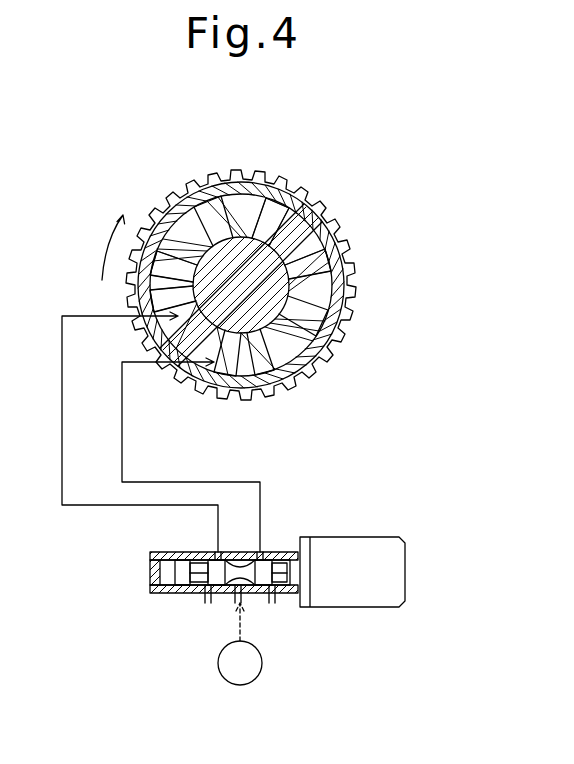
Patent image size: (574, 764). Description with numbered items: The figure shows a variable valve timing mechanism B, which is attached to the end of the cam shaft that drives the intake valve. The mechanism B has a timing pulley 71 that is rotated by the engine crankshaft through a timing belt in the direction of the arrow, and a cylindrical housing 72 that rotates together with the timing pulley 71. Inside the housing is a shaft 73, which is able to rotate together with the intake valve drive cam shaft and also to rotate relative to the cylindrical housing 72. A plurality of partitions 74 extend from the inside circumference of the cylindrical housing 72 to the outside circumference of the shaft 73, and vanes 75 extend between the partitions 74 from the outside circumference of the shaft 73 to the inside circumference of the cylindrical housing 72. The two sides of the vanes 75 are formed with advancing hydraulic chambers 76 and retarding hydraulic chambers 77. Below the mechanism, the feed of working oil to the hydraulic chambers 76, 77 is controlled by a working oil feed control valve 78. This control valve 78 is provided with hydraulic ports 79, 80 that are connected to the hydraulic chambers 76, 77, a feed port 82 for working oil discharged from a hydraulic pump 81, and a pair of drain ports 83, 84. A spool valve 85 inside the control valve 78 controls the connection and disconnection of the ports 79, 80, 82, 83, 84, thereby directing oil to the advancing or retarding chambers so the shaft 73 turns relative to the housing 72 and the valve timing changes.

The timing pulley 71 is at (352, 322).
The cylindrical housing 72 is at (330, 370).
The shaft 73 is at (299, 192).
The partitions 74 is at (203, 180).
The vanes 75 is at (177, 198).
The advancing hydraulic chambers 76 is at (345, 297).
The retarding hydraulic chambers 77 is at (172, 326).
The working oil feed control valve 78 is at (385, 520).
The hydraulic port 79 is at (262, 548).
The hydraulic port 80 is at (217, 549).
The hydraulic pump 81 is at (260, 672).
The feed port 82 is at (235, 602).
The drain port 83 is at (272, 602).
The drain port 84 is at (205, 602).
The spool valve 85 is at (183, 572).
The variable valve timing mechanism B is at (368, 220).